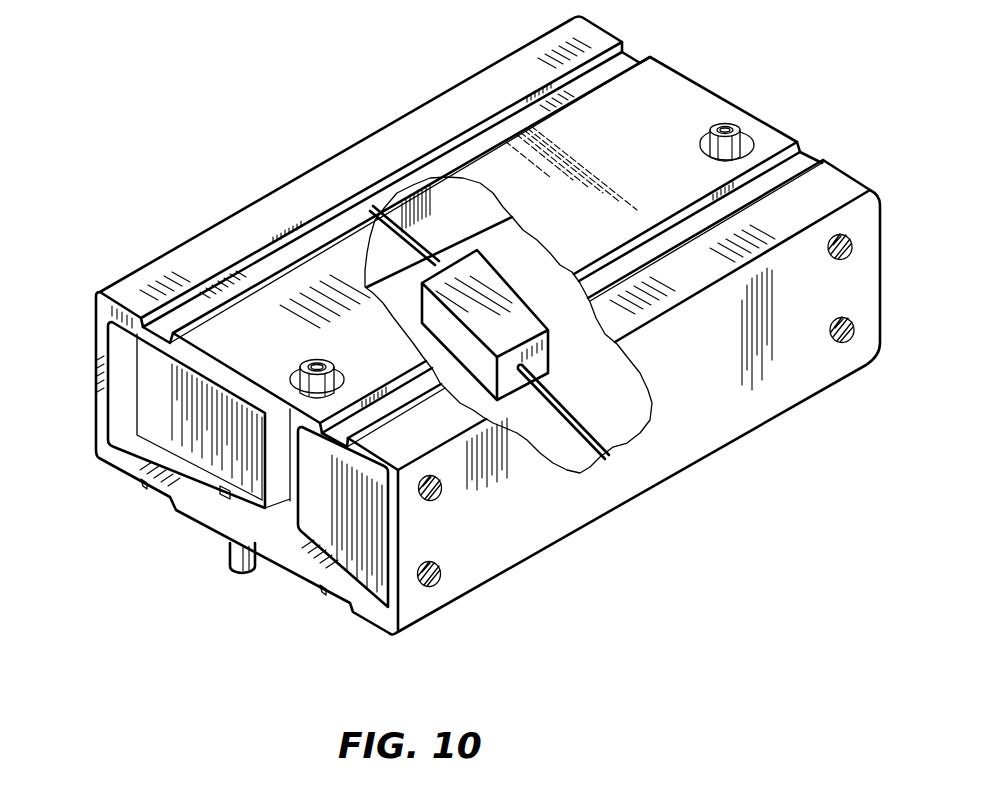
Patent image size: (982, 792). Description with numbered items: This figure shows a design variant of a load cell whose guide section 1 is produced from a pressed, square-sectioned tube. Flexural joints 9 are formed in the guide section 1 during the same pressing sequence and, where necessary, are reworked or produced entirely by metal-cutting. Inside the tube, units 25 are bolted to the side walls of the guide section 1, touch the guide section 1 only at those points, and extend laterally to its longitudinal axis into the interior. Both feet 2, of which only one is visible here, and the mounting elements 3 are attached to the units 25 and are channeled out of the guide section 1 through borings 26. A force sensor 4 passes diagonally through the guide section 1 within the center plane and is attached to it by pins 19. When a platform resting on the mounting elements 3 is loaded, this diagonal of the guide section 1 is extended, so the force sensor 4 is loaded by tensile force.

The guide section 1 is at (497, 58).
The foot 2 is at (232, 562).
The mounting element 3 is at (305, 362).
The force sensor 4 is at (560, 342).
The flexural joint 9 is at (263, 262).
The pin 19 is at (392, 238).
The unit 25 is at (148, 393).
The boring 26 is at (756, 141).